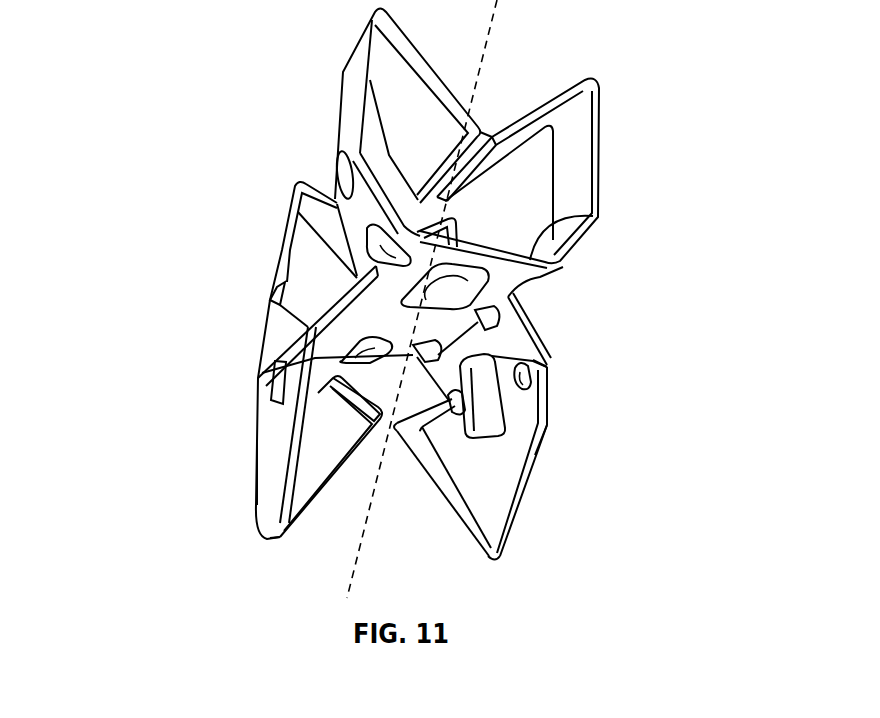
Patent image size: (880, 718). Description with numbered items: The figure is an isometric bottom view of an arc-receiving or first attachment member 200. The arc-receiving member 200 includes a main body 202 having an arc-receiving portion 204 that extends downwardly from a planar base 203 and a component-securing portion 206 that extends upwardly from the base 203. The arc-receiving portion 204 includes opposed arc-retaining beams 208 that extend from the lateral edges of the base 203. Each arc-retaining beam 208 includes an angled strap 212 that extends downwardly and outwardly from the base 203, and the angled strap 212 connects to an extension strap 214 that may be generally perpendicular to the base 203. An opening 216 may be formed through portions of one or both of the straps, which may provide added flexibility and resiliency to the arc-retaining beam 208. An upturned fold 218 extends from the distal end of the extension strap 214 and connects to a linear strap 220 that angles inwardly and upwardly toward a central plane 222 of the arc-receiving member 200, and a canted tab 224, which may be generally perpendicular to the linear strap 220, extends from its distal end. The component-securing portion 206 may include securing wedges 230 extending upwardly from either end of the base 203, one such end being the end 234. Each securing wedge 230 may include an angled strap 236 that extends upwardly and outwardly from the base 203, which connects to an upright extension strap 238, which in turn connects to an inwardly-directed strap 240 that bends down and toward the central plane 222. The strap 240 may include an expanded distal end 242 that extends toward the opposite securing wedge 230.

The arc-receiving member 200 is at (162, 95).
The main body 202 is at (258, 437).
The planar base 203 is at (545, 290).
The arc-receiving portion 204 is at (523, 325).
The component-securing portion 206 is at (600, 137).
The arc-retaining beam 208 is at (263, 400).
The angled strap 212 is at (343, 320).
The extension strap 214 is at (263, 465).
The opening 216 is at (487, 393).
The upturned fold 218 is at (270, 538).
The linear strap 220 is at (303, 517).
The central plane 222 is at (487, 42).
The canted tab 224 is at (339, 397).
The securing wedge 230 is at (612, 64).
The end of the base 234 is at (593, 218).
The angled strap 236 is at (334, 183).
The upright extension strap 238 is at (338, 117).
The inwardly-directed strap 240 is at (432, 62).
The expanded distal end 242 is at (497, 167).